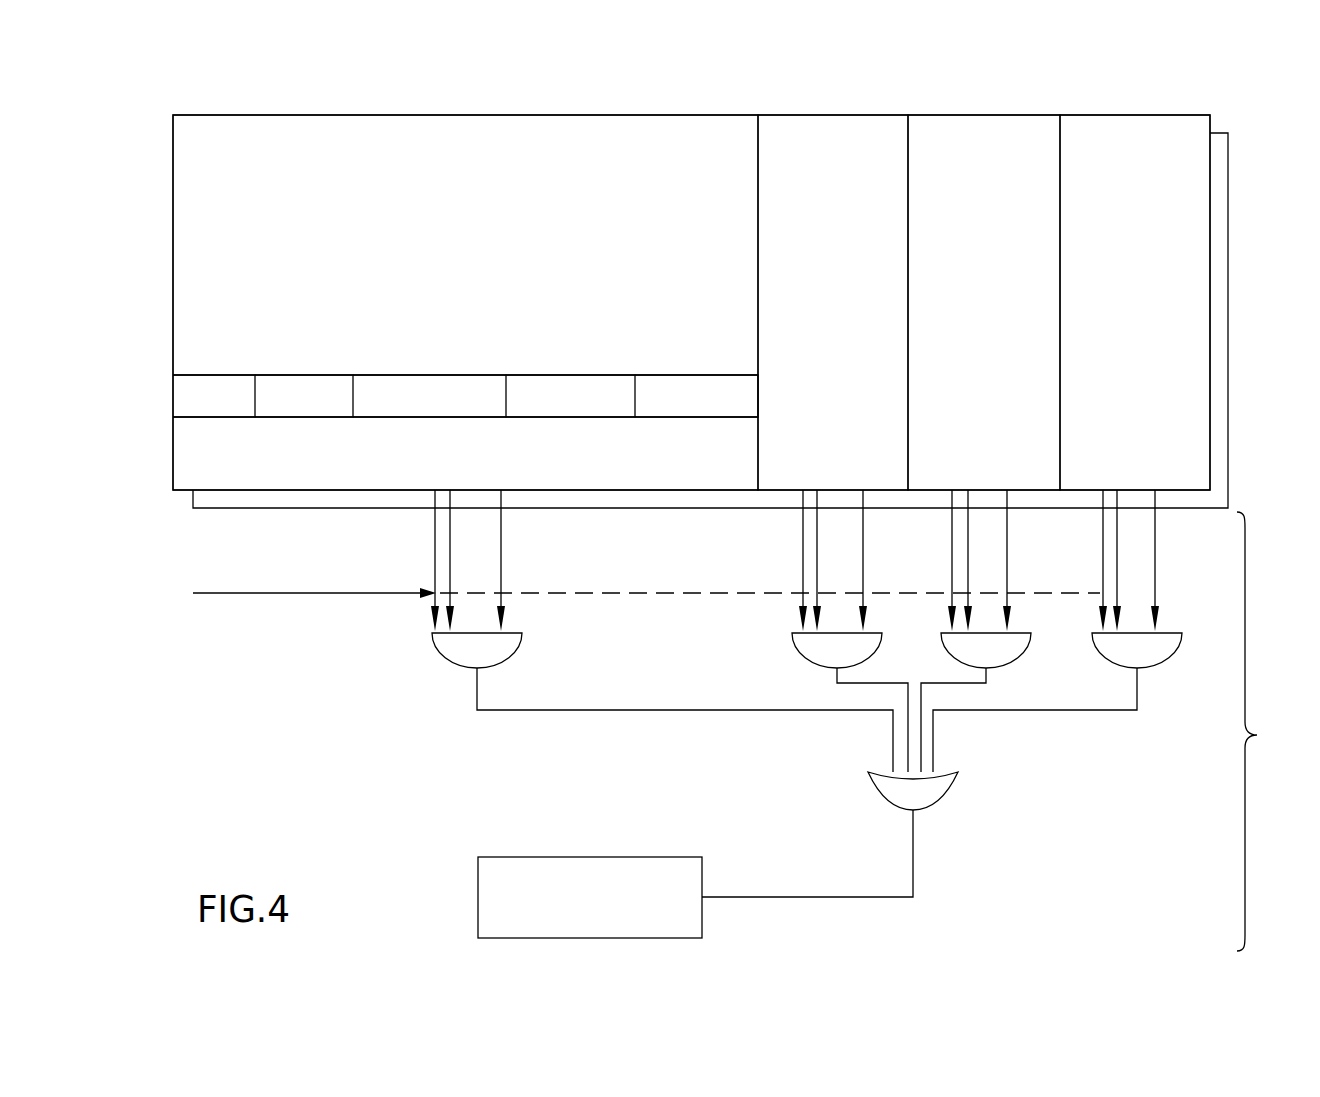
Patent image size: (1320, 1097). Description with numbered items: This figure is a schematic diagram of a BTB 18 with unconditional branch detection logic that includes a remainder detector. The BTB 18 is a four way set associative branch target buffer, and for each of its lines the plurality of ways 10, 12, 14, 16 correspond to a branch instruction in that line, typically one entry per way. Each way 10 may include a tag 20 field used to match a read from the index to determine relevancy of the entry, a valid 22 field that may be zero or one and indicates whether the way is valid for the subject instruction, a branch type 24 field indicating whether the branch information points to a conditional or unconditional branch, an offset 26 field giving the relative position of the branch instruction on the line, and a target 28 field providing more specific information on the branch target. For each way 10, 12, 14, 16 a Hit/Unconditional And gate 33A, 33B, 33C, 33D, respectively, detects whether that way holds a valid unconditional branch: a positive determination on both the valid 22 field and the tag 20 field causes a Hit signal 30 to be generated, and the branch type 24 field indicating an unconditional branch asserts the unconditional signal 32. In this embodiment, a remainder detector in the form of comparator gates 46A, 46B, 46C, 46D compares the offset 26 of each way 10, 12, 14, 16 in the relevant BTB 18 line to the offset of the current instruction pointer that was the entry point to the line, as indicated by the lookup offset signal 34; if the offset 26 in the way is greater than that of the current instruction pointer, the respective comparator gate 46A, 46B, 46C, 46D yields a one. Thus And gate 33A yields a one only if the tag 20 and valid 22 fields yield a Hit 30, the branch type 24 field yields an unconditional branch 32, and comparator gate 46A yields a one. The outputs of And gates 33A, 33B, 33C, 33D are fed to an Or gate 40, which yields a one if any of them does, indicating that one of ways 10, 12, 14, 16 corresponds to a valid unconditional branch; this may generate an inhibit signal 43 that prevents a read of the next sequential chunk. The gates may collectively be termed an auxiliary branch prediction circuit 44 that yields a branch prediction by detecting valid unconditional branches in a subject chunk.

The way 10 is at (465, 302).
The way 12 is at (833, 302).
The way 14 is at (984, 302).
The way 16 is at (1135, 302).
The BTB 18 is at (1130, 92).
The tag field 20 is at (217, 374).
The valid field 22 is at (297, 374).
The branch type field 24 is at (420, 374).
The offset field 26 is at (562, 374).
The target field 28 is at (680, 374).
The Hit signal 30 is at (447, 533).
The unconditional signal 32 is at (503, 547).
The lookup offset signal 34 is at (318, 594).
The comparator gate 46A is at (437, 565).
The comparator gate 46B is at (803, 565).
The comparator gate 46C is at (953, 522).
The comparator gate 46D is at (1100, 568).
The Hit/Unconditional And gate 33A is at (513, 650).
The Hit/Unconditional And gate 33B is at (806, 655).
The Hit/Unconditional And gate 33C is at (1019, 660).
The Hit/Unconditional And gate 33D is at (1162, 665).
The Or gate 40 is at (953, 770).
The inhibit signal 43 is at (590, 857).
The auxiliary branch prediction circuit 44 is at (1271, 731).